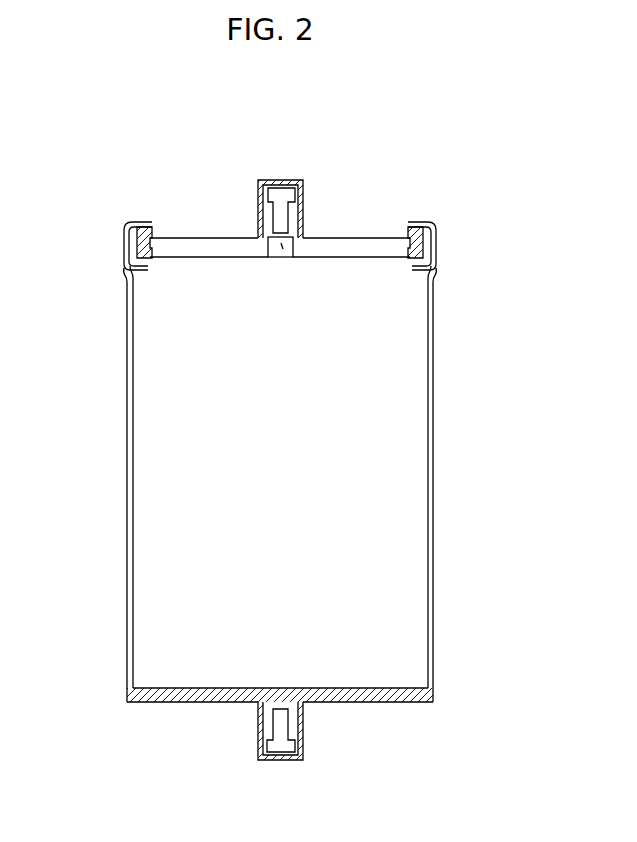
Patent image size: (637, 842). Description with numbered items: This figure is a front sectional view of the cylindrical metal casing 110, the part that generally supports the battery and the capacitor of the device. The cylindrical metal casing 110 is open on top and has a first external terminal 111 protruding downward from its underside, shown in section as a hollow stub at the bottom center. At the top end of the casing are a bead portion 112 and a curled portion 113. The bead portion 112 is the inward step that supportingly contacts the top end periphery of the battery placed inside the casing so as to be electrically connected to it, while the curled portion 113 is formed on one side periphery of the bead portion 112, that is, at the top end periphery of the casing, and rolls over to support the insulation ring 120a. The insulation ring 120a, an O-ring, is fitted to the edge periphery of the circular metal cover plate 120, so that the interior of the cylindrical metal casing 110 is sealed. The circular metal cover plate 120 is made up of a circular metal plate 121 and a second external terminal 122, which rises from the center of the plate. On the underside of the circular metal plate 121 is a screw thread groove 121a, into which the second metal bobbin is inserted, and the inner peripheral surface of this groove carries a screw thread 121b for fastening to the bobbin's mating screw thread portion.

The cylindrical metal casing 110 is at (124, 486).
The first external terminal 111 is at (275, 732).
The bead portion 112 is at (128, 272).
The curled portion 113 is at (130, 224).
The circular metal cover plate 120 is at (373, 170).
The insulation ring 120a is at (150, 230).
The circular metal plate 121 is at (346, 244).
The screw thread groove 121a is at (282, 259).
The screw thread 121b is at (266, 250).
The second external terminal 122 is at (293, 195).